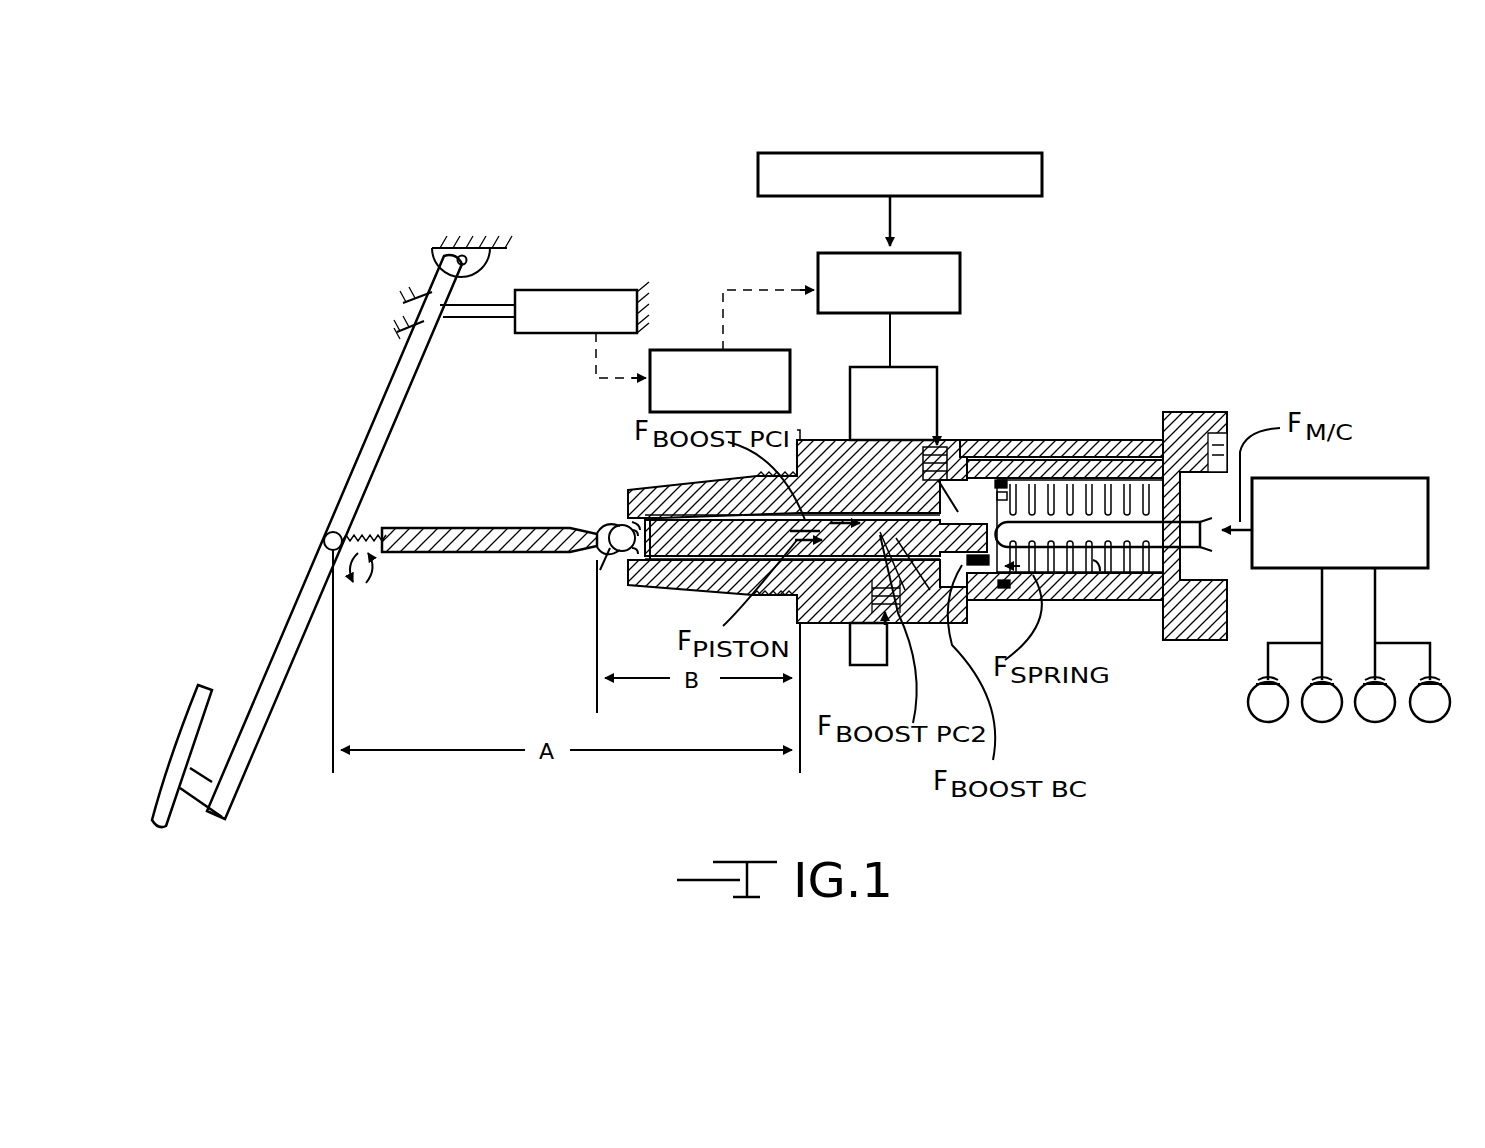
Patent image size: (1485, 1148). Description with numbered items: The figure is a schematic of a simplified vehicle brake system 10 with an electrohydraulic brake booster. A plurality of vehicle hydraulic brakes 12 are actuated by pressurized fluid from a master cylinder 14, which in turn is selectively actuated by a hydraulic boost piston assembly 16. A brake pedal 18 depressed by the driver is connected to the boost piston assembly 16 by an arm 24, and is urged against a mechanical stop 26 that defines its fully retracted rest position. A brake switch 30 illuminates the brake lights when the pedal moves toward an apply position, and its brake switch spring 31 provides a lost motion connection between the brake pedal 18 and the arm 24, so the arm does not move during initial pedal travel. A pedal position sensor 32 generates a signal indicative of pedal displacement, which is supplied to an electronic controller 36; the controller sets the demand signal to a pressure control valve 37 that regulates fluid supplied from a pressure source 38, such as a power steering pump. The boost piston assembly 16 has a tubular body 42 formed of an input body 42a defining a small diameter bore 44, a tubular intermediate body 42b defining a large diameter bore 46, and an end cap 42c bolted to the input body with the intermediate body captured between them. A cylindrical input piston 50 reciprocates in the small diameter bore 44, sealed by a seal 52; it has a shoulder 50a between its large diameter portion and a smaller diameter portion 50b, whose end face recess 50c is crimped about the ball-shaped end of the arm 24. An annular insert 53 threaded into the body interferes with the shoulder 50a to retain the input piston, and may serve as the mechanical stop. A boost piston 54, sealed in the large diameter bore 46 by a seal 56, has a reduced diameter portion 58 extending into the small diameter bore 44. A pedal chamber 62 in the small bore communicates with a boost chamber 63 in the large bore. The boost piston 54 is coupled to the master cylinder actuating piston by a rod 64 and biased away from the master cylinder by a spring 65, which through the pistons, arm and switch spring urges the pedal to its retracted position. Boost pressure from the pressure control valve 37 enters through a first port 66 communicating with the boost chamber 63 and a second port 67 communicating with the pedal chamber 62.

The vehicle brake system 10 is at (1204, 246).
The vehicle hydraulic brakes 12 is at (1265, 718).
The master cylinder 14 is at (1363, 478).
The hydraulic boost piston assembly 16 is at (1195, 412).
The brake pedal 18 is at (372, 452).
The arm 24 is at (490, 528).
The mechanical stop 26 is at (393, 300).
The brake switch 30 is at (358, 578).
The brake switch spring 31 is at (374, 535).
The pedal position sensor 32 is at (548, 298).
The electronic controller 36 is at (650, 400).
The pressure control valve 37 is at (955, 298).
The pressure source 38 is at (1042, 158).
The tubular body 42 is at (668, 585).
The input body 42a is at (835, 462).
The tubular intermediate body 42b is at (1130, 465).
The end cap 42c is at (1197, 630).
The small diameter bore 44 is at (706, 552).
The large diameter bore 46 is at (1113, 575).
The input piston 50 is at (672, 528).
The shoulder 50a is at (622, 520).
The smaller diameter portion 50b is at (625, 555).
The recess 50c is at (622, 540).
The seal 52 is at (820, 623).
The annular insert 53 is at (628, 565).
The boost piston 54 is at (1003, 488).
The seal 56 is at (1000, 585).
The reduced diameter portion 58 is at (888, 535).
The pedal chamber 62 is at (930, 445).
The boost chamber 63 is at (975, 570).
The rod 64 is at (1068, 525).
The spring 65 is at (1092, 574).
The first port 66 is at (886, 560).
The second port 67 is at (943, 447).